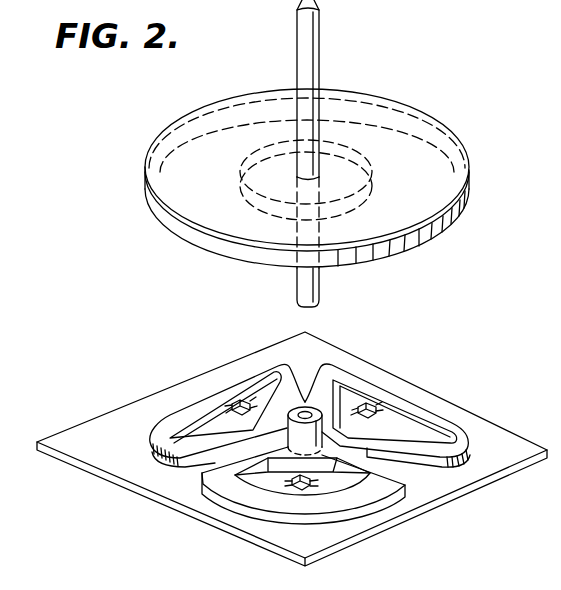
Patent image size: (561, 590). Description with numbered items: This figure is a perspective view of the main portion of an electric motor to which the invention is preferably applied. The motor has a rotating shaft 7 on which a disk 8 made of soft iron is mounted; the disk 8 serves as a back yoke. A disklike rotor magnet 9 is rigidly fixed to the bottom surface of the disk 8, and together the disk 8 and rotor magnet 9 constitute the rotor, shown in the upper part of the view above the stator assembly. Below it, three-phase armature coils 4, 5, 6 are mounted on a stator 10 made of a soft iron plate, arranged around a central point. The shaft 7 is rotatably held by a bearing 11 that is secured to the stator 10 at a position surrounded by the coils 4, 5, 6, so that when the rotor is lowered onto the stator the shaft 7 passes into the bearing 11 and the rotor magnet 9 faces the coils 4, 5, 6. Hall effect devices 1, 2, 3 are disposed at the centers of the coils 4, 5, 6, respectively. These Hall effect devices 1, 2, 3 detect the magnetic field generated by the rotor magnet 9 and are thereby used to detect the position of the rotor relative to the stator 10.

The Hall effect device 1 is at (233, 403).
The Hall effect device 2 is at (302, 492).
The Hall effect device 3 is at (370, 405).
The armature coil 4 is at (187, 405).
The armature coil 5 is at (218, 499).
The armature coil 6 is at (415, 395).
The rotating shaft 7 is at (303, 60).
The disk 8 is at (190, 158).
The rotor magnet 9 is at (180, 230).
The stator 10 is at (112, 425).
The bearing 11 is at (322, 400).